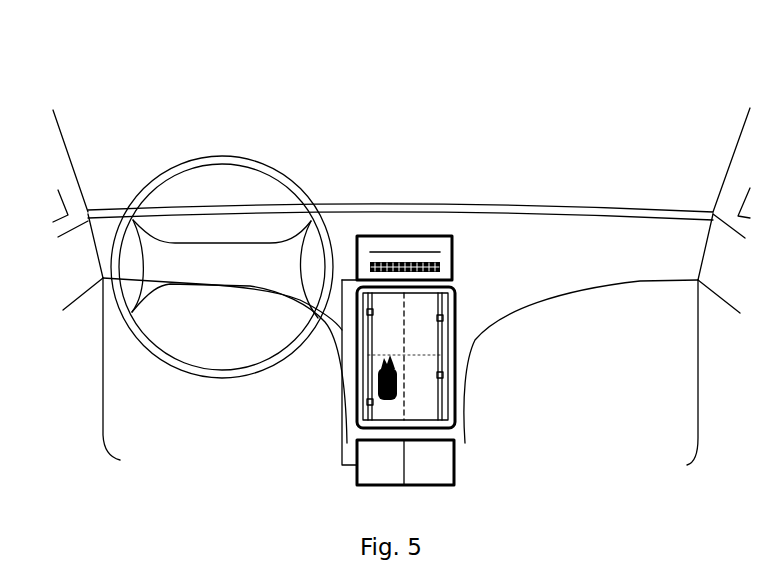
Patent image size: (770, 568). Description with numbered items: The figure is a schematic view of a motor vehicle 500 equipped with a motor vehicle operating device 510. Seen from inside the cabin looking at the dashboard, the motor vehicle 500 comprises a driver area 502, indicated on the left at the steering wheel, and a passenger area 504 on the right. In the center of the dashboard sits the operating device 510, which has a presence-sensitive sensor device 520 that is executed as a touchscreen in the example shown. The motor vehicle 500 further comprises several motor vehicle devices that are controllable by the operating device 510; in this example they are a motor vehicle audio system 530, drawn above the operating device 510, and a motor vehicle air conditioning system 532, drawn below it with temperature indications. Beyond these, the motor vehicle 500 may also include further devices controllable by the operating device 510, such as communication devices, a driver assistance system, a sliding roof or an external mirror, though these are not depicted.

The motor vehicle 500 is at (76, 64).
The driver area 502 is at (270, 114).
The passenger area 504 is at (540, 113).
The motor vehicle operating device 510 is at (455, 337).
The presence-sensitive sensor device 520 is at (440, 375).
The motor vehicle audio system 530 is at (452, 248).
The motor vehicle air conditioning system 532 is at (454, 452).